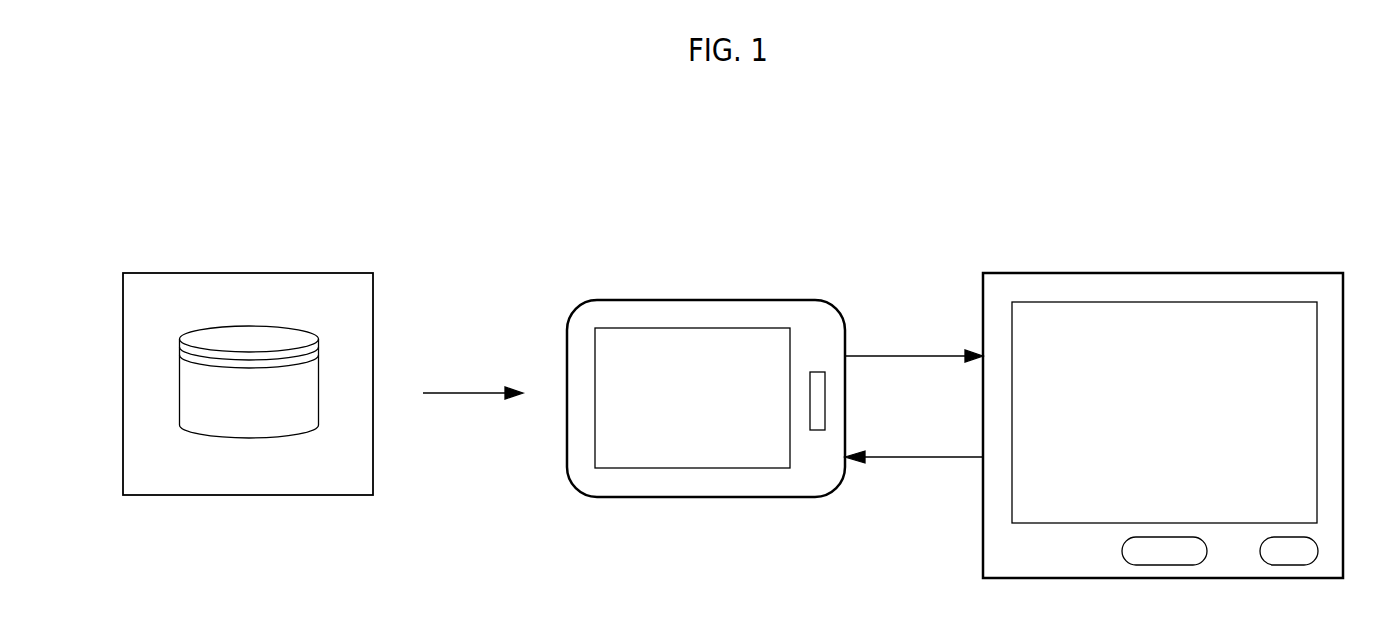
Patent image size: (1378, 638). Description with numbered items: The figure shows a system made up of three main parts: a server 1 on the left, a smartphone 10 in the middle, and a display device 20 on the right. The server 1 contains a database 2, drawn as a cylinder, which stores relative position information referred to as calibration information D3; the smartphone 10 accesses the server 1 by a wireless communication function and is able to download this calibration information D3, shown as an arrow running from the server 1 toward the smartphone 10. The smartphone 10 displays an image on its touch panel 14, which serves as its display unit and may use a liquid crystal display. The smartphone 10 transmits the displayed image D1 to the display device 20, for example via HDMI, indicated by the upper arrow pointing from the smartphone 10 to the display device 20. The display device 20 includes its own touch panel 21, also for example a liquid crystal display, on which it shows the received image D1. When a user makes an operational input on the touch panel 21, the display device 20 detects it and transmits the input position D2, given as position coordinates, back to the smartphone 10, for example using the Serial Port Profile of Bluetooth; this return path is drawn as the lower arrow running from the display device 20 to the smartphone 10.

The server 1 is at (248, 368).
The database 2 is at (285, 438).
The smartphone 10 is at (706, 369).
The touch panel 14 is at (680, 402).
The display device 20 is at (1163, 402).
The touch panel 21 is at (1144, 421).
The image D1 is at (900, 356).
The input position D2 is at (905, 457).
The calibration information D3 is at (472, 395).